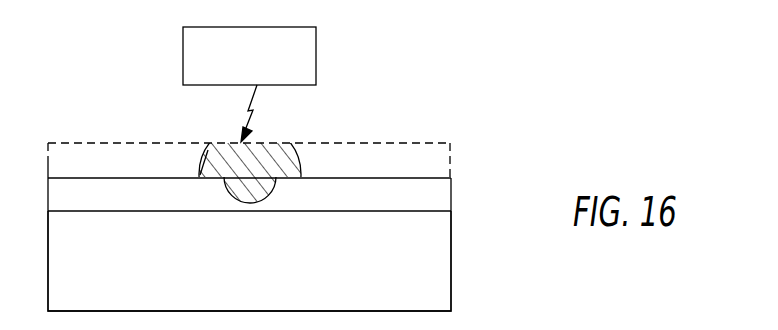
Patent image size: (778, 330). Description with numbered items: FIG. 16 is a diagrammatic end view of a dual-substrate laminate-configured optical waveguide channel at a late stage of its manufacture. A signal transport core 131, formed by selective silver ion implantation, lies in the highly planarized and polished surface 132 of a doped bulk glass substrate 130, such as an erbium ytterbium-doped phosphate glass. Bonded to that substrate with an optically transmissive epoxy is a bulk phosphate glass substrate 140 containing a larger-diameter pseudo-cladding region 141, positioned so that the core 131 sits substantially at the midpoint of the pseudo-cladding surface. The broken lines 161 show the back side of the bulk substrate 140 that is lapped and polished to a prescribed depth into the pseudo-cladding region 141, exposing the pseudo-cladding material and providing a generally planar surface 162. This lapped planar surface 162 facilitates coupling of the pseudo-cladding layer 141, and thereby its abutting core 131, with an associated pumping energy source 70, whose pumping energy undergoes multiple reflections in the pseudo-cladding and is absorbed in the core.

The pumping energy source 70 is at (316, 50).
The broken lines 161 is at (393, 153).
The planar surface 162 is at (271, 143).
The pseudo-cladding region 141 is at (201, 173).
The bulk phosphate glass substrate 140 is at (453, 178).
The planarized and polished surface 132 is at (430, 208).
The signal transport core 131 is at (262, 201).
The doped bulk glass substrate 130 is at (438, 267).